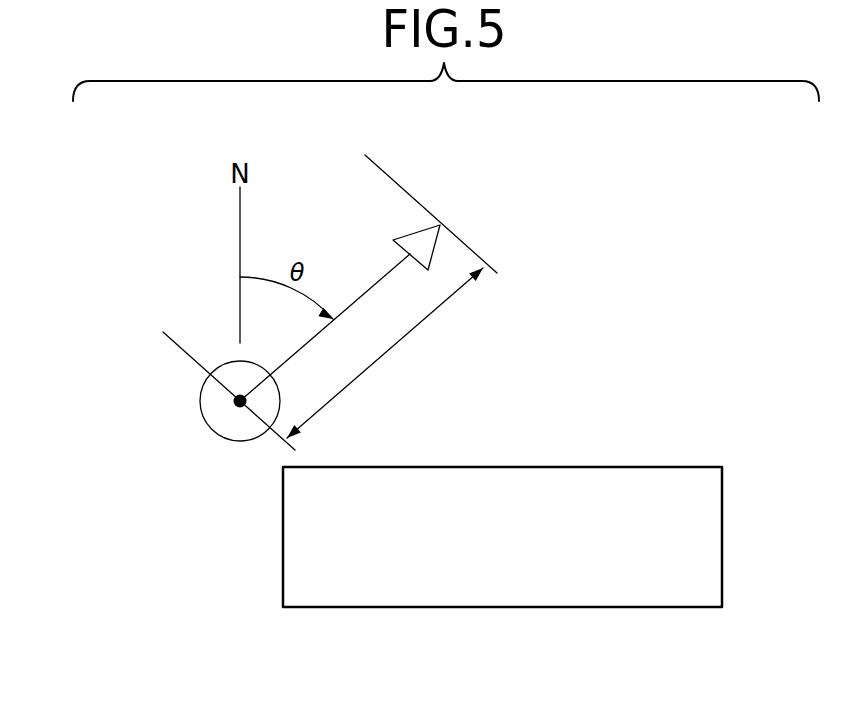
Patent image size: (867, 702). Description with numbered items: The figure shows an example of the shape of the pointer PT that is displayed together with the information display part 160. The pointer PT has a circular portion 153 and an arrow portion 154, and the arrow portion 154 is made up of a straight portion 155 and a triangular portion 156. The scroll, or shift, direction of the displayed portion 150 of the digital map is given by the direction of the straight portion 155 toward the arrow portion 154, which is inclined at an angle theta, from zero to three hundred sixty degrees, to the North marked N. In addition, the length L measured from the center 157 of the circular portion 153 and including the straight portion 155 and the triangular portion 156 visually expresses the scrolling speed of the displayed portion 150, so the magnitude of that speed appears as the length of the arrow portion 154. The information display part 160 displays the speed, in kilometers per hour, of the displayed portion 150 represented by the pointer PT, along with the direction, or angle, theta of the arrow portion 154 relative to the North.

The displayed portion of the digital map 150 is at (113, 322).
The circular portion 153 is at (238, 442).
The arrow portion 154 is at (360, 284).
The straight portion 155 is at (366, 294).
The triangular portion 156 is at (436, 249).
The center of the circular portion 157 is at (233, 400).
The information display part 160 is at (623, 467).
The pointer PT is at (193, 425).